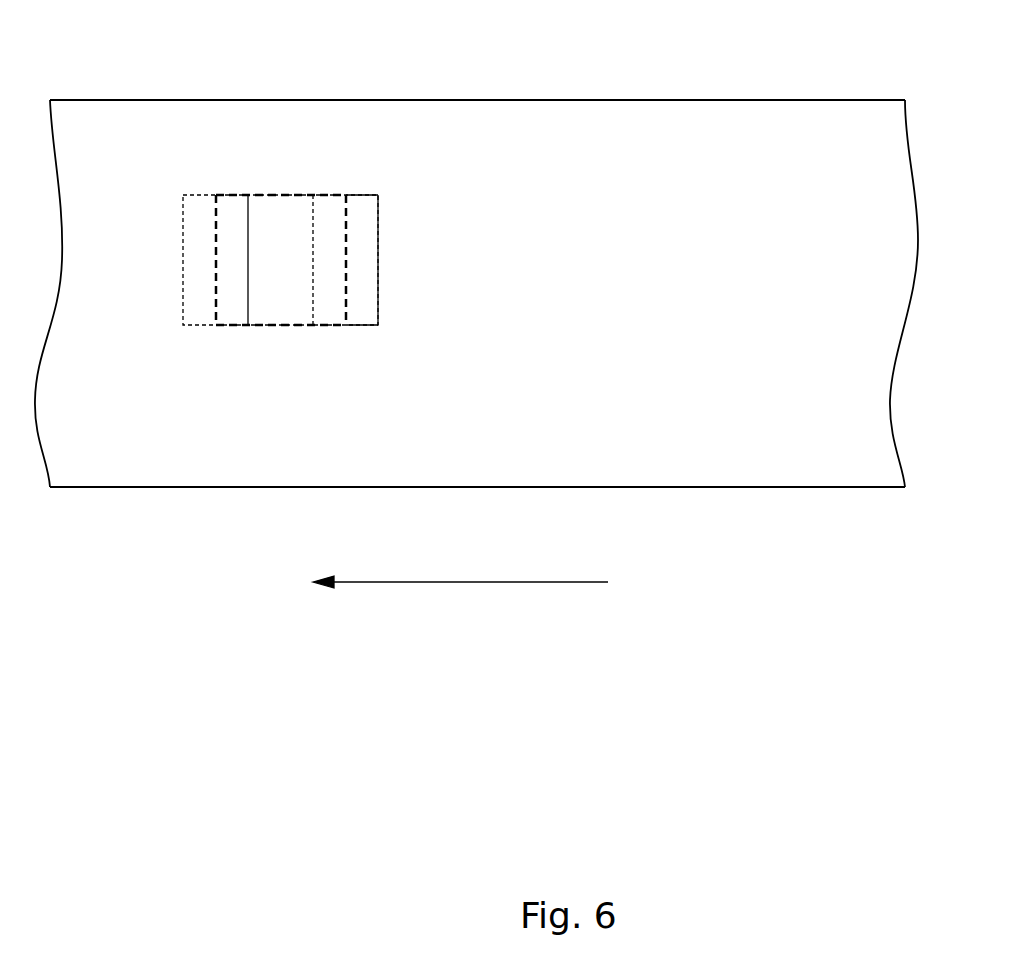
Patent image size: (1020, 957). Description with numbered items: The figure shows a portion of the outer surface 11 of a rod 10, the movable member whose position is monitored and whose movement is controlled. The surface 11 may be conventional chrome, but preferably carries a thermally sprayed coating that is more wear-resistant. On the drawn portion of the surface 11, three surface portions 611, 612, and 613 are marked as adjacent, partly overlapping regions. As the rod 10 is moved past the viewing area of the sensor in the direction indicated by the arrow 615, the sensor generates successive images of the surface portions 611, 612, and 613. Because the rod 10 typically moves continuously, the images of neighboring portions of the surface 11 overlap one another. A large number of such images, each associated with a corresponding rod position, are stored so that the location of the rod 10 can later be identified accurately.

The rod 10 is at (686, 487).
The outer surface 11 is at (672, 112).
The surface portion 611 is at (183, 228).
The surface portion 612 is at (233, 325).
The surface portion 613 is at (362, 325).
The arrow 615 is at (497, 582).